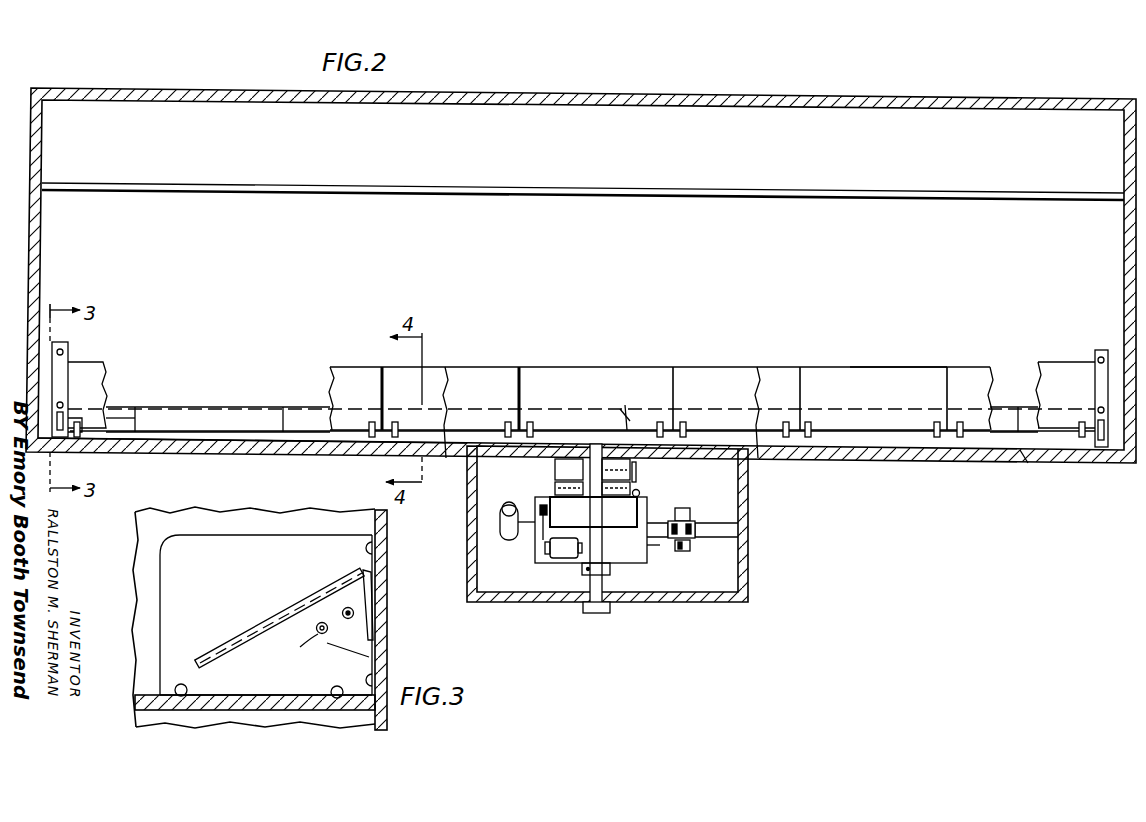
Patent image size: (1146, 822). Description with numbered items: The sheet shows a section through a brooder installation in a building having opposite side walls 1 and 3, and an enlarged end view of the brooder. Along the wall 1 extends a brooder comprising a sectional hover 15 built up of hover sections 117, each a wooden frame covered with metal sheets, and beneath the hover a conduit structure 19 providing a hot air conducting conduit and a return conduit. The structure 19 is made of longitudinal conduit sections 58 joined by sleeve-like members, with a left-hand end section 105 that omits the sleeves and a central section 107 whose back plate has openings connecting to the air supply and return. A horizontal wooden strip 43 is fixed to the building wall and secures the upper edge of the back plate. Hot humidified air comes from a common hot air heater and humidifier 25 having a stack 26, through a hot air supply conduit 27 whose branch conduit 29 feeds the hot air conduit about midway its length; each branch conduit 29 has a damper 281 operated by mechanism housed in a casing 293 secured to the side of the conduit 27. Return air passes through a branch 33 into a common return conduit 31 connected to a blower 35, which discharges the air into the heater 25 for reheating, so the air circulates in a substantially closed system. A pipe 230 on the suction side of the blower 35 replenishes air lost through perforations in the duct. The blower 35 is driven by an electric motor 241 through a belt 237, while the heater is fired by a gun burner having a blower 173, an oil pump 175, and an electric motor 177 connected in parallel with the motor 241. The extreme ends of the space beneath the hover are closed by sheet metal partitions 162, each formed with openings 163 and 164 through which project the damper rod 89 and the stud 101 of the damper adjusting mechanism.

In FIG. 2, the side wall 1 is at (1018, 462).
In FIG. 2, the side wall 3 is at (760, 101).
In FIG. 2, the sectional hover 15 is at (851, 367).
In FIG. 2, the conduit structure 19 is at (162, 407).
In FIG. 2, the hot air heater and humidifier 25 is at (650, 563).
In FIG. 2, the stack 26 is at (512, 540).
In FIG. 2, the hot air supply conduit 27 is at (591, 530).
In FIG. 2, the branch conduit 29 is at (622, 461).
In FIG. 2, the common return conduit 31 is at (565, 490).
In FIG. 2, the branch 33 is at (568, 470).
In FIG. 2, the blower 35 is at (662, 517).
In FIG. 2, the horizontal wooden strip 43 is at (242, 440).
In FIG. 2, the conduit section 58 is at (210, 407).
In FIG. 3, the conduit section 58 is at (352, 650).
In FIG. 3, the rod 89 is at (305, 642).
In FIG. 3, the stud 101 is at (354, 611).
In FIG. 2, the end section 105 is at (118, 420).
In FIG. 2, the central section 107 is at (628, 404).
In FIG. 2, the hover section 117 is at (100, 368).
In FIG. 3, the hover section 117 is at (296, 602).
In FIG. 2, the sheet metal partition 162 is at (70, 351).
In FIG. 3, the sheet metal partition 162 is at (254, 550).
In FIG. 3, the opening 163 is at (320, 634).
In FIG. 3, the opening 164 is at (370, 626).
In FIG. 2, the blower 173 is at (695, 530).
In FIG. 2, the oil pump 175 is at (690, 512).
In FIG. 2, the electric motor 177 is at (690, 545).
In FIG. 2, the pipe 230 is at (602, 580).
In FIG. 2, the belt 237 is at (545, 545).
In FIG. 2, the electric motor 241 is at (562, 538).
In FIG. 2, the damper 281 is at (616, 422).
In FIG. 2, the casing 293 is at (641, 493).